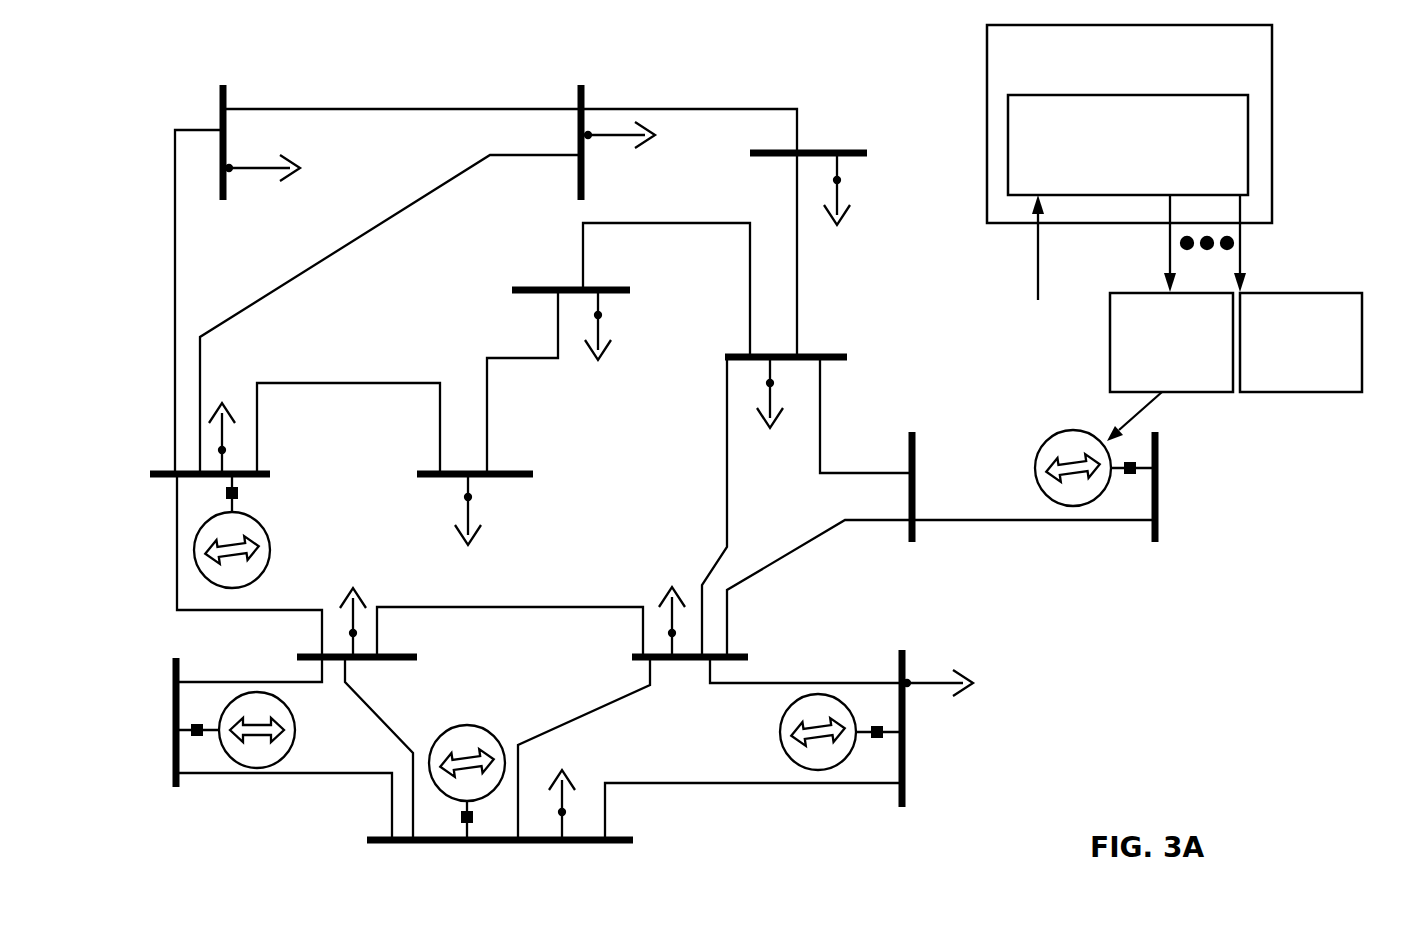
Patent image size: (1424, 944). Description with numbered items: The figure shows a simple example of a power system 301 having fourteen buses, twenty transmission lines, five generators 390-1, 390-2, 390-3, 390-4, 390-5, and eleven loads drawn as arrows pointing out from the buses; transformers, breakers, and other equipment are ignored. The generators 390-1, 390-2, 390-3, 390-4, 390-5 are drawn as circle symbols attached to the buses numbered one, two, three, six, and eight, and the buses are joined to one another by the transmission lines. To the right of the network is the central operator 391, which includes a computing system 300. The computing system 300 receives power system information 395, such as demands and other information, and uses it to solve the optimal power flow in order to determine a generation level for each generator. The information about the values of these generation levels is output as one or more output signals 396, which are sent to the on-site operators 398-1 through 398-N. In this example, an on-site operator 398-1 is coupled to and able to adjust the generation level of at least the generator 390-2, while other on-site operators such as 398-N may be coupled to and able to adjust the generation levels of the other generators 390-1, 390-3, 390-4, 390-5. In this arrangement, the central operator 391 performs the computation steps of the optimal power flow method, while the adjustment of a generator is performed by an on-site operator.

The power system 301 is at (140, 153).
The central operator 391 is at (1129, 124).
The computing system 300 is at (1128, 145).
The power system information 395 is at (1043, 282).
The output signals 396 is at (1248, 265).
The on-site operator 398-1 is at (1178, 392).
The on-site operator 398-N is at (1315, 392).
The generator 390-1 is at (268, 540).
The generator 390-2 is at (1040, 452).
The generator 390-3 is at (791, 706).
The generator 390-4 is at (452, 727).
The generator 390-5 is at (290, 710).